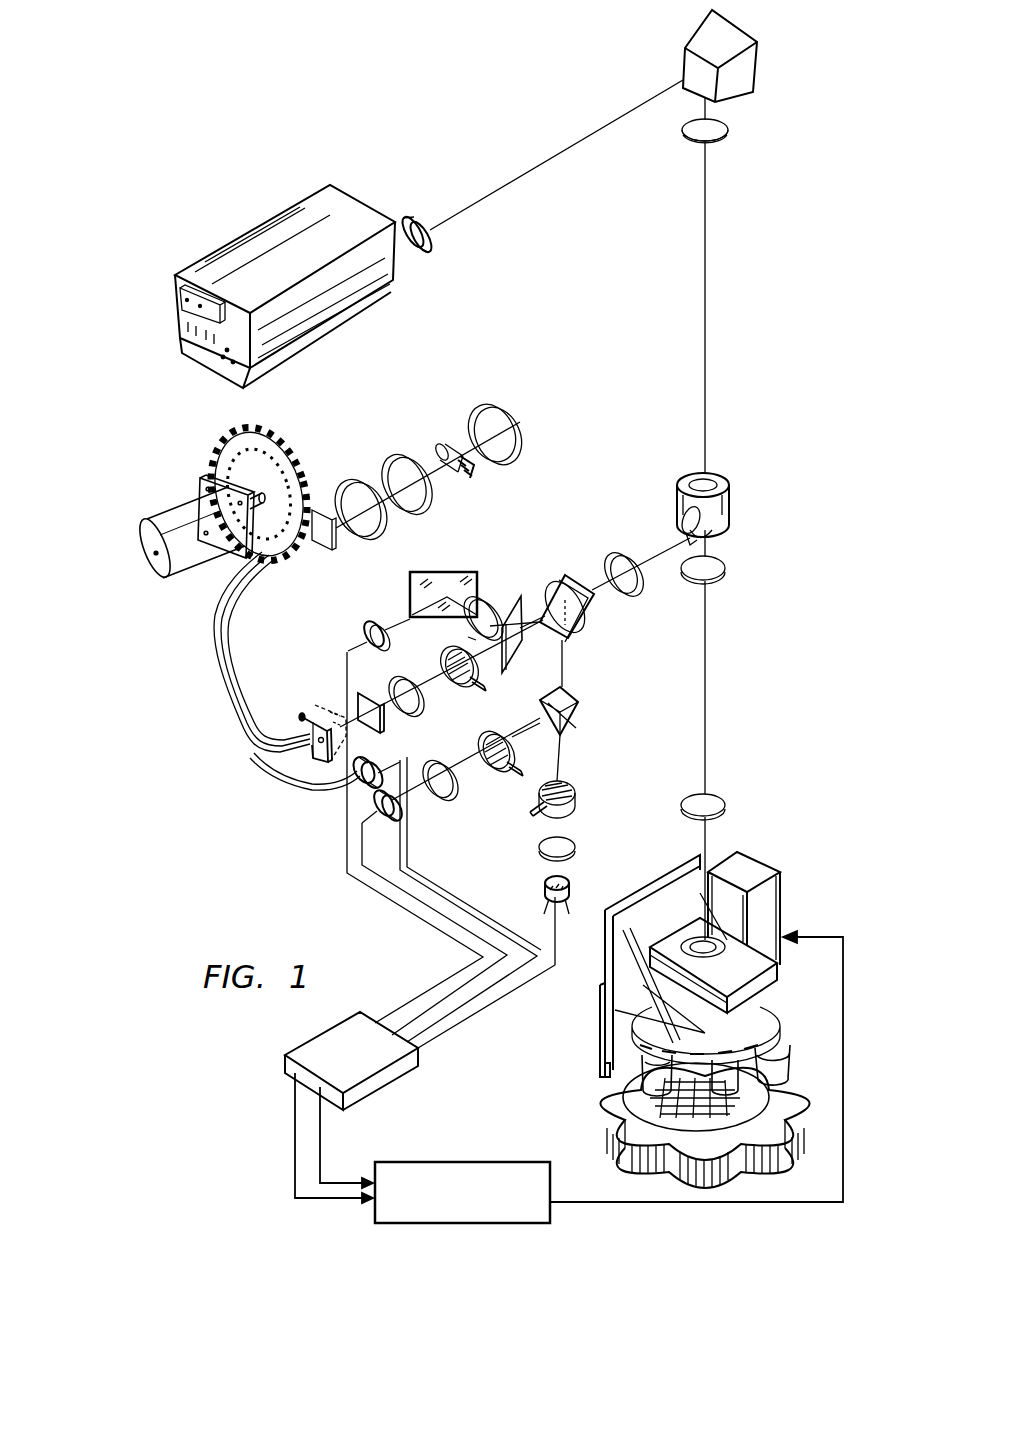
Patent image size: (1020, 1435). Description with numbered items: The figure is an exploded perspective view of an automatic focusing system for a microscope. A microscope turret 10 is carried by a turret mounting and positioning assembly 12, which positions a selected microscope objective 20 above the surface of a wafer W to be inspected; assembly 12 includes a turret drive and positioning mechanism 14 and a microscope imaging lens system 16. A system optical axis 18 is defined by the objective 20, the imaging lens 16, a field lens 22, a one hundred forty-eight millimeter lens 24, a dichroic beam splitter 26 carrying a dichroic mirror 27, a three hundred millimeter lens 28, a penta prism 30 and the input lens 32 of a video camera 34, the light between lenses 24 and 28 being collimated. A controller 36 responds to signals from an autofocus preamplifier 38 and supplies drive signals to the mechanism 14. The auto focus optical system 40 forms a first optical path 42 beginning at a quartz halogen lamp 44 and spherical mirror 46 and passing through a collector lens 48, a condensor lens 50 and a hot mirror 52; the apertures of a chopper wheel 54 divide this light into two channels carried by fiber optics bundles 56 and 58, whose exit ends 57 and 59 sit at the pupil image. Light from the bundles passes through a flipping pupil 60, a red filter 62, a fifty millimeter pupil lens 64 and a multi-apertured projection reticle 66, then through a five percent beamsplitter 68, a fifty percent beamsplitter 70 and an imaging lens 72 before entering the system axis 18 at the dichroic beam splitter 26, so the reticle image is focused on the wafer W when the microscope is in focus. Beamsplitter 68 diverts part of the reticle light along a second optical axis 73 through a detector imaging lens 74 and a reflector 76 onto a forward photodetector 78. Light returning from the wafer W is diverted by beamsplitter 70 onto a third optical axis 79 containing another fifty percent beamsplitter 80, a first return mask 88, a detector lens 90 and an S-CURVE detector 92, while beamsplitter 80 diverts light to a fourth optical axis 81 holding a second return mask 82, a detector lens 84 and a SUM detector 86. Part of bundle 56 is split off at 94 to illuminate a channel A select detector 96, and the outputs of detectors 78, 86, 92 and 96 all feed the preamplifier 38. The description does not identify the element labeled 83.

The microscope turret 10 is at (682, 1020).
The turret mounting and positioning assembly 12 is at (600, 1012).
The turret drive and positioning mechanism 14 is at (755, 873).
The microscope imaging lens system 16 is at (748, 955).
The system optical axis 18 is at (706, 403).
The microscope objective 20 is at (697, 1140).
The field lens 22 is at (727, 804).
The 148 mm lens 24 is at (720, 563).
The dichroic beam splitter 26 is at (740, 503).
The dichroic mirror 27 is at (688, 530).
The 300 mm lens 28 is at (728, 140).
The penta prism 30 is at (750, 85).
The input lens 32 is at (423, 246).
The video camera 34 is at (325, 314).
The controller 36 is at (458, 1165).
The autofocus preamplifier 38 is at (360, 1097).
The auto focus optical system 40 is at (243, 867).
The first optical path 42 is at (392, 478).
The quartz halogen lamp 44 is at (452, 446).
The spherical mirror 46 is at (512, 420).
The collector lens 48 is at (410, 455).
The condensor lens 50 is at (346, 484).
The hot mirror 52 is at (318, 550).
The chopper wheel 54 is at (250, 432).
The fiber optics bundle 56 is at (200, 615).
The exit end 57 is at (310, 740).
The fiber optics bundle 58 is at (238, 606).
The exit end 59 is at (300, 717).
The flipping pupil 60 is at (325, 752).
The red filter 62 is at (384, 726).
The 50 mm pupil lens 64 is at (420, 708).
The multi-apertured projection reticle 66 is at (470, 684).
The 5% beamsplitter 68 is at (516, 654).
The 50% beamsplitter 70 is at (566, 572).
The imaging lens 72 is at (628, 548).
The second optical axis 73 is at (470, 638).
The detector imaging lens 74 is at (488, 596).
The reflector 76 is at (410, 596).
The forward photodetector 78 is at (375, 621).
The third optical axis 79 is at (566, 664).
The 50% beamsplitter 80 is at (580, 730).
The fourth optical axis 81 is at (525, 730).
The second return mask 82 is at (490, 770).
The optical axis 83 is at (564, 756).
The detector lens 84 is at (436, 798).
The SUM detector 86 is at (394, 820).
The first return mask 88 is at (578, 800).
The detector lens 90 is at (575, 852).
The S-CURVE detector 92 is at (546, 886).
The split-off part of fiber optics bundle 94 is at (262, 780).
The channel A select detector 96 is at (357, 786).
The wafer W is at (600, 1114).